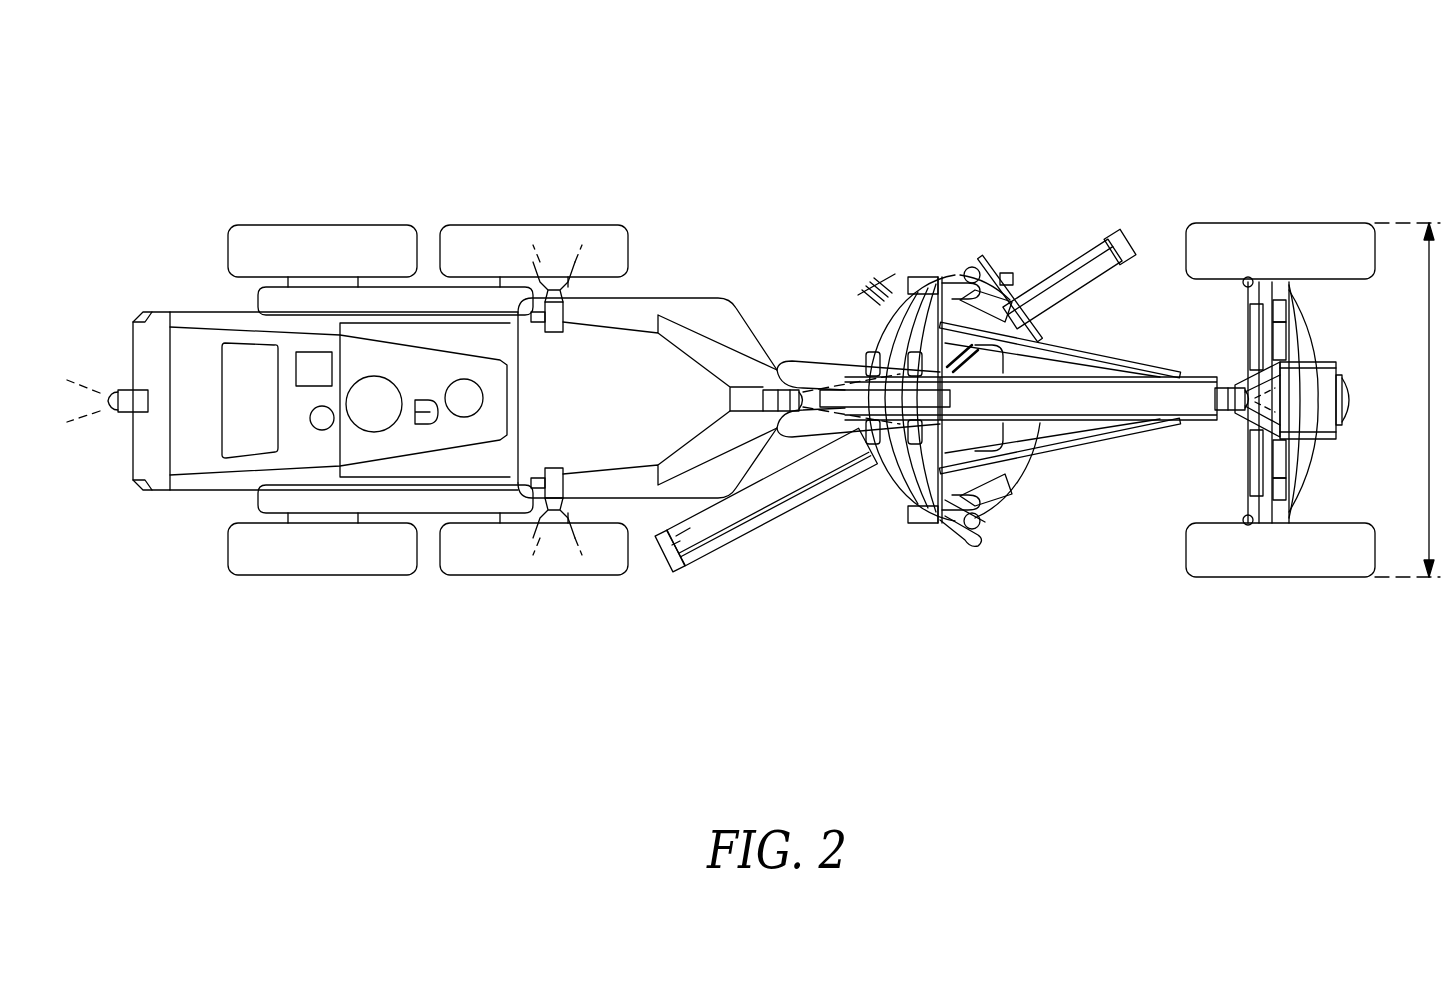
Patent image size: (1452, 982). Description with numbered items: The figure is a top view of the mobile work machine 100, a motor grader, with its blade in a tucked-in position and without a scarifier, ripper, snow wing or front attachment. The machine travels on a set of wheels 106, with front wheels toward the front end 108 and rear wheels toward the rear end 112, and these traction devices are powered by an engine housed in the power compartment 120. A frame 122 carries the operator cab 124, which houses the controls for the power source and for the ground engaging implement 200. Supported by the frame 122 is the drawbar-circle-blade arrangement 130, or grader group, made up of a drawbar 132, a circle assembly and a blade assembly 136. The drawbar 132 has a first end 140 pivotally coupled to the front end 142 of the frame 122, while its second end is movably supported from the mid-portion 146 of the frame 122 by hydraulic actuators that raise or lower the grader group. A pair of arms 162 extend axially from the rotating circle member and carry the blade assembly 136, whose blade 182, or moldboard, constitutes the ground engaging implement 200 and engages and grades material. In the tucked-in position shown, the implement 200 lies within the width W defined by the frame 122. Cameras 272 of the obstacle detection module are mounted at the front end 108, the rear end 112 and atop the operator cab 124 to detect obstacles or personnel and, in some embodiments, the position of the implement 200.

The mobile work machine 100 is at (1236, 121).
The wheels 106 is at (258, 225).
The front end 108 is at (1337, 365).
The rear end 112 is at (133, 322).
The power compartment 120 is at (196, 345).
The frame 122 is at (1170, 405).
The operator cab 124 is at (633, 358).
The drawbar-circle-blade arrangement 130 is at (934, 282).
The drawbar 132 is at (1105, 445).
The blade assembly 136 is at (718, 556).
The first end 140 is at (1205, 445).
The front end of the frame 142 is at (1342, 400).
The mid-portion 146 is at (1028, 452).
The pair of arms 162 is at (992, 512).
The blade 182 is at (762, 514).
The ground engaging implement 200 is at (1068, 244).
The cameras 272 is at (120, 412).